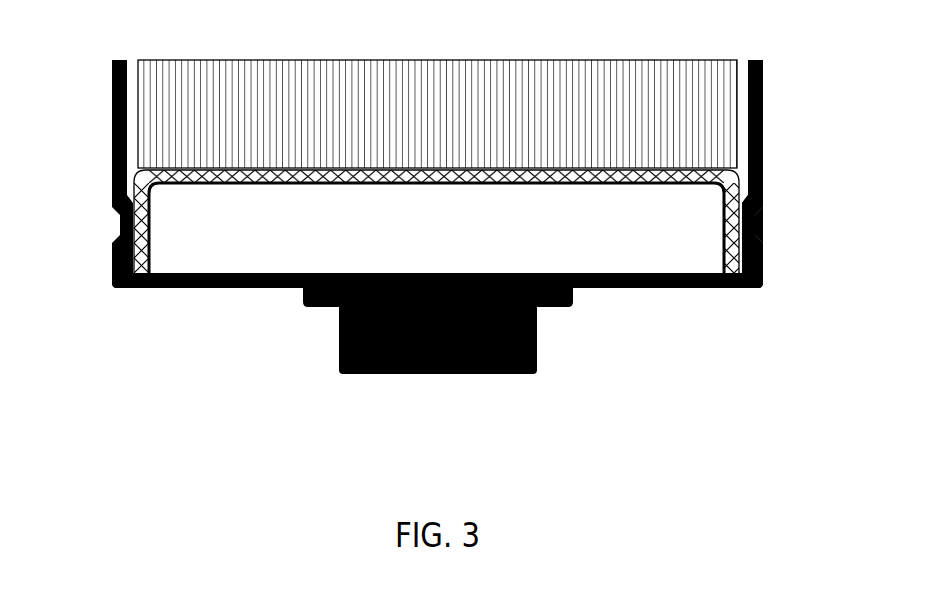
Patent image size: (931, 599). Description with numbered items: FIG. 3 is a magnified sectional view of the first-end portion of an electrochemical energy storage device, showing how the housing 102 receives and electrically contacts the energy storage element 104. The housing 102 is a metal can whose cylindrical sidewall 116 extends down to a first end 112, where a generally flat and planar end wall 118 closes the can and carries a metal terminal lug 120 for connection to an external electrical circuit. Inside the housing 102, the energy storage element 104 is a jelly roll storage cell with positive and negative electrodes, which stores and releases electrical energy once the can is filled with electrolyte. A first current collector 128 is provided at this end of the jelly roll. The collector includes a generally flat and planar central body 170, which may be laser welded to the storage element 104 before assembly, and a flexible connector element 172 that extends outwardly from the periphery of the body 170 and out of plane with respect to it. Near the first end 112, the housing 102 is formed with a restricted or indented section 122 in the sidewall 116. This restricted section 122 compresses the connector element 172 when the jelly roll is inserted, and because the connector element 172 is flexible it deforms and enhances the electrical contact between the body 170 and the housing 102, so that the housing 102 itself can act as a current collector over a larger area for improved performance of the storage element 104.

The housing 102 is at (112, 142).
The energy storage element 104 is at (470, 78).
The first end 112 is at (765, 261).
The cylindrical sidewall 116 is at (764, 107).
The end wall 118 is at (678, 290).
The terminal lug 120 is at (437, 375).
The restricted section 122 is at (750, 222).
The first current collector 128 is at (357, 182).
The central body 170 is at (450, 185).
The flexible connector element 172 is at (152, 228).